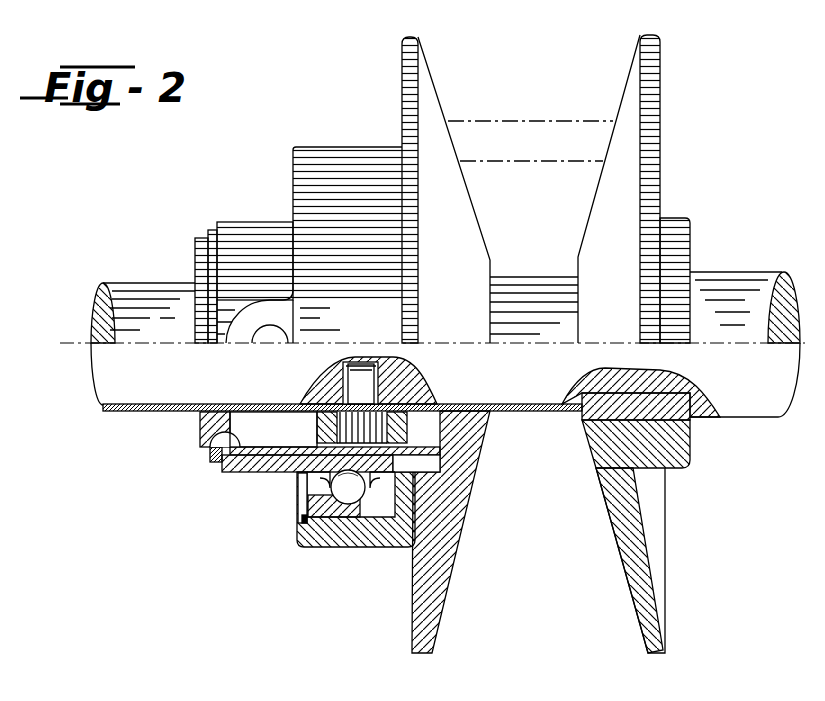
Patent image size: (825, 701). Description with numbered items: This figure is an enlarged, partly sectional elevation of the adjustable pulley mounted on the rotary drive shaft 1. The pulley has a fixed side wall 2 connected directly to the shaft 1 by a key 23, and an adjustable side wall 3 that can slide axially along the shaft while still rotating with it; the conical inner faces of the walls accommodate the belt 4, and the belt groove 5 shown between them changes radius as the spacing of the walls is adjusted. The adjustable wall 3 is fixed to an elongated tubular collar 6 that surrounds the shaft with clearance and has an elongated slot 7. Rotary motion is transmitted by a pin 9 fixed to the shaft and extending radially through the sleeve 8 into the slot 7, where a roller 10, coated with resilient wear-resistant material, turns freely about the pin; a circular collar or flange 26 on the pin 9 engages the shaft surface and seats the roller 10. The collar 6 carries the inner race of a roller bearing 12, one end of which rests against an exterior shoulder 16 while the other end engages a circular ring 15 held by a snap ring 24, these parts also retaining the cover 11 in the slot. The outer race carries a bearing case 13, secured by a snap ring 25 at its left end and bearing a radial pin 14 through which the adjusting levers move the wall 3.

The rotary drive shaft 1 is at (722, 272).
The fixed pulley side wall 2 is at (658, 108).
The adjustable pulley side wall 3 is at (402, 97).
The belt 4 is at (565, 119).
The belt groove 5 is at (528, 119).
The tubular collar 6 is at (195, 254).
The elongated slot 7 is at (257, 425).
The sleeve 8 is at (113, 410).
The pin 9 is at (320, 388).
The roller 10 is at (317, 428).
The cover 11 is at (200, 448).
The bearing means 12 is at (351, 505).
The bearing case 13 is at (293, 176).
The coaxial pin 14 is at (283, 332).
The circular ring 15 is at (247, 222).
The exterior shoulder 16 is at (440, 472).
The key 23 is at (692, 418).
The snap ring 24 is at (209, 230).
The snap ring 25 is at (300, 516).
The circular collar or flange 26 is at (387, 402).